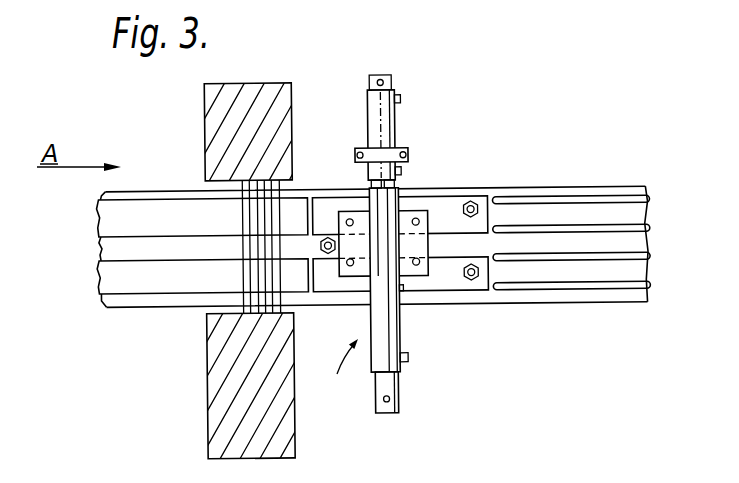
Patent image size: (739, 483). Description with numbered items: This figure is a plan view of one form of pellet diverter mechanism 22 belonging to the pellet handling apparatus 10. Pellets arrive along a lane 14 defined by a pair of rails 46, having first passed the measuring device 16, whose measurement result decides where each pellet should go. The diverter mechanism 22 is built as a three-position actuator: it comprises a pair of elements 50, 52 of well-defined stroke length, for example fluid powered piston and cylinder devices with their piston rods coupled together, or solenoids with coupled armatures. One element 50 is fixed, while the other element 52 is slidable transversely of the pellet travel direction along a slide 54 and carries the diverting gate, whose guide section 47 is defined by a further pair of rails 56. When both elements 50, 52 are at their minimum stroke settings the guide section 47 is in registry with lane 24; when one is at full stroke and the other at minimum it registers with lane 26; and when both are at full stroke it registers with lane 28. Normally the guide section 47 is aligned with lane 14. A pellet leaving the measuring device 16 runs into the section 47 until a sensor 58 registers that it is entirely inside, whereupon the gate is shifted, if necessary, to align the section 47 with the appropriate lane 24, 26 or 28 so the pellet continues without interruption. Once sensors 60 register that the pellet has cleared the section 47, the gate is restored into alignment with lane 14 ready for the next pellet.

The conveyor track assembly 10 is at (490, 293).
The lane 14 is at (125, 249).
The measuring device 16 is at (217, 112).
The diverter mechanism 22 is at (336, 376).
The lane 24 is at (608, 212).
The lane 26 is at (636, 244).
The lane 28 is at (604, 277).
The rails 46 is at (147, 208).
The guide section 47 is at (448, 245).
The fixed element 50 is at (391, 132).
The slidable element 52 is at (388, 337).
The slide 54 is at (398, 395).
The rails 56 is at (432, 202).
The sensor 58 is at (327, 236).
The sensors 60 is at (478, 203).